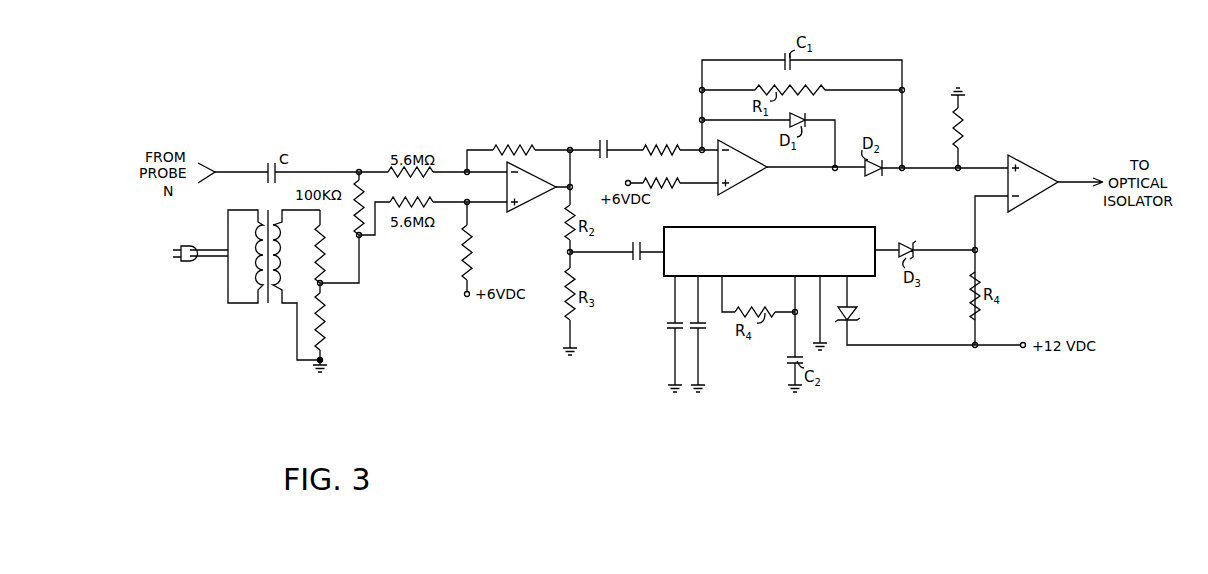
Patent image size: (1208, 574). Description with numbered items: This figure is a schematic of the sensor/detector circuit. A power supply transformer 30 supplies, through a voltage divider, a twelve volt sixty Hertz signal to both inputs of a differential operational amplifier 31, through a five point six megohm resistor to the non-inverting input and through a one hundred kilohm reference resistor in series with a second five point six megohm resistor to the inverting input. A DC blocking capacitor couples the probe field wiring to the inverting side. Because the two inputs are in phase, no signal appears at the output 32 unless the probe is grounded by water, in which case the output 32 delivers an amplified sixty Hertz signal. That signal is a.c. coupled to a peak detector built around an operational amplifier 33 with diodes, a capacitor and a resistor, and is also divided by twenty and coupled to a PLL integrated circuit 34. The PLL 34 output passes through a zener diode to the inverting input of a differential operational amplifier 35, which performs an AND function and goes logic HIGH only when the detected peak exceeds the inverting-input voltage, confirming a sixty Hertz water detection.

The power supply transformer 30 is at (268, 302).
The differential operational amplifier 31 is at (527, 205).
The output 32 is at (562, 182).
The operational amplifier 33 is at (742, 182).
The PLL integrated circuit 34 is at (873, 204).
The differential operational amplifier 35 is at (1023, 203).